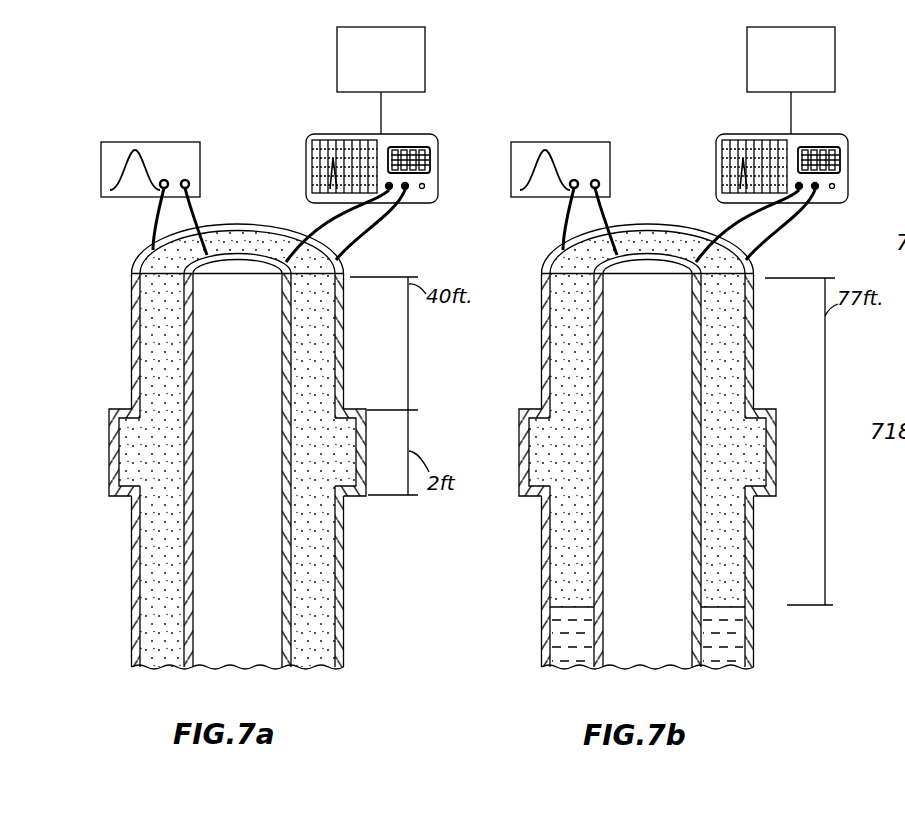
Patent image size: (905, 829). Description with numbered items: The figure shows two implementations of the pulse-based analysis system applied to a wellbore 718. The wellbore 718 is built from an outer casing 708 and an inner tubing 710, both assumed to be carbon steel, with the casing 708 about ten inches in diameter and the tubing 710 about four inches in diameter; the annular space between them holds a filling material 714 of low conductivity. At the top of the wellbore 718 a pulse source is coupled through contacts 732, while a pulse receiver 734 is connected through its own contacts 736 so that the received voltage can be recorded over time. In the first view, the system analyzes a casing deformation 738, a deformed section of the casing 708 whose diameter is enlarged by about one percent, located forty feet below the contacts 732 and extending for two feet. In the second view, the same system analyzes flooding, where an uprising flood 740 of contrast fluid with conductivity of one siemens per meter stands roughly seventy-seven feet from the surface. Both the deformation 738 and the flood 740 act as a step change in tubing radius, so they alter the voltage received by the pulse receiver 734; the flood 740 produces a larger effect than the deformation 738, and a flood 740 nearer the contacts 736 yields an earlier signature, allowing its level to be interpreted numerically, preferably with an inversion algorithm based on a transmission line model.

In FIG. 7A, the casing 708 is at (344, 298).
In FIG. 7B, the casing 708 is at (754, 300).
In FIG. 7A, the tubing 710 is at (290, 573).
In FIG. 7B, the tubing 710 is at (700, 515).
In FIG. 7A, the filling material 714 is at (167, 648).
In FIG. 7B, the filling material 714 is at (568, 593).
In FIG. 7A, the wellbore 718 is at (211, 472).
In FIG. 7B, the wellbore 718 is at (625, 467).
In FIG. 7A, the contacts 732 is at (208, 253).
In FIG. 7B, the contacts 732 is at (618, 253).
In FIG. 7A, the pulse receiver 734 is at (410, 134).
In FIG. 7B, the pulse receiver 734 is at (820, 134).
In FIG. 7A, the contacts 736 is at (337, 259).
In FIG. 7B, the contacts 736 is at (747, 259).
In FIG. 7A, the casing deformation 738 is at (345, 430).
In FIG. 7B, the casing deformation 738 is at (757, 440).
In FIG. 7B, the flood 740 is at (728, 628).